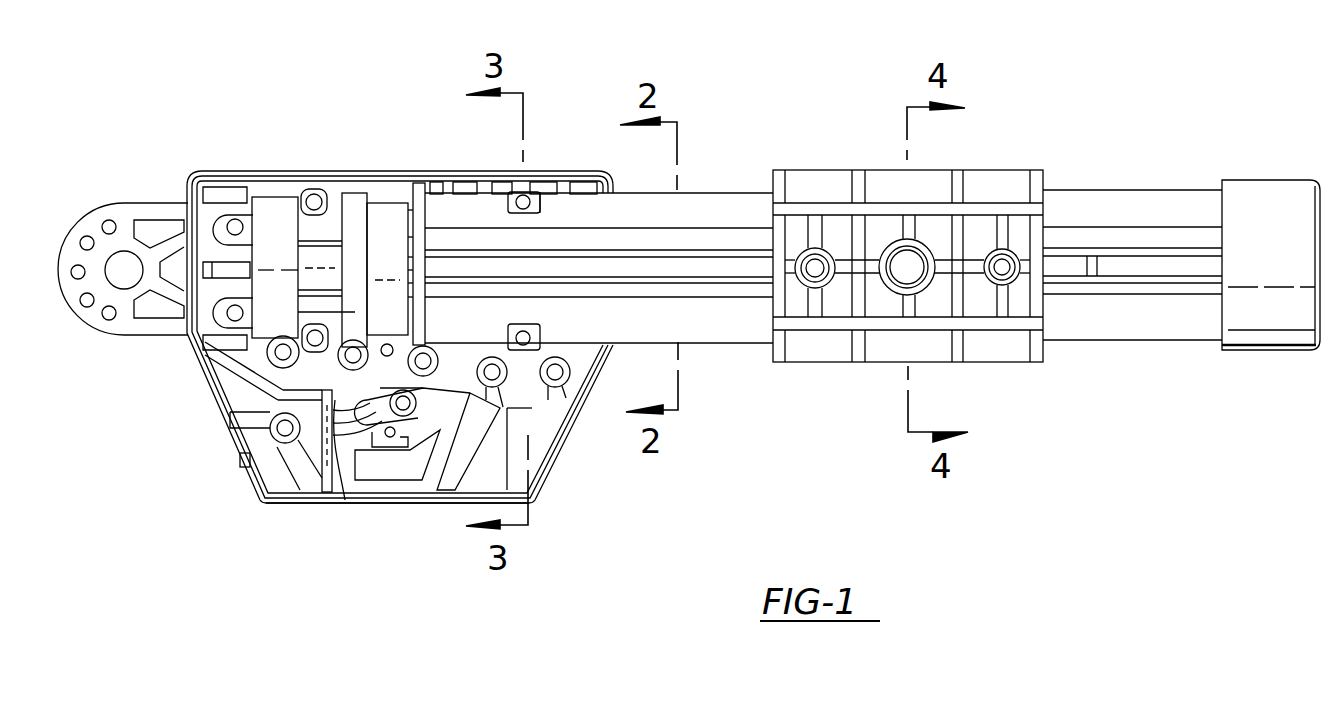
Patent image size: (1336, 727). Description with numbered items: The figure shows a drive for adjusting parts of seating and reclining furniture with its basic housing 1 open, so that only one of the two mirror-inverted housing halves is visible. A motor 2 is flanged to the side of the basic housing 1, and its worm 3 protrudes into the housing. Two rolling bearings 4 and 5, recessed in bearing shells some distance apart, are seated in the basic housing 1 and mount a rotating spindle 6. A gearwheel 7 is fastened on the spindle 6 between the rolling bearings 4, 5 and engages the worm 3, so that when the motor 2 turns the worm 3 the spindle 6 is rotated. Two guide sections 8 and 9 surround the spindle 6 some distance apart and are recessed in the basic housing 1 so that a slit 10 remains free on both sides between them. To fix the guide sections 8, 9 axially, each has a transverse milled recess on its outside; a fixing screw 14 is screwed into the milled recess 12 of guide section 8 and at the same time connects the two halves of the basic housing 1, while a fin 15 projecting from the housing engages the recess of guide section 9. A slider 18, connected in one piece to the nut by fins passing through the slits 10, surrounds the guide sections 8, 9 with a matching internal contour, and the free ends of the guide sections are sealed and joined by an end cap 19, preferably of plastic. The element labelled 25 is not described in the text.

The basic housing 1 is at (438, 498).
The motor 2 is at (335, 372).
The worm 3 is at (357, 370).
The rolling bearing 4 is at (266, 198).
The rolling bearing 5 is at (383, 214).
The spindle 6 is at (317, 250).
The gearwheel 7 is at (352, 312).
The guide section 8 is at (1082, 203).
The guide section 9 is at (1118, 320).
The slit 10 is at (1143, 263).
The milled recess 12 is at (543, 212).
The fixing screw 14 is at (520, 200).
The fin 15 is at (518, 348).
The slider 18 is at (935, 182).
The end cap 19 is at (1268, 192).
The mounting bracket 25 is at (129, 210).